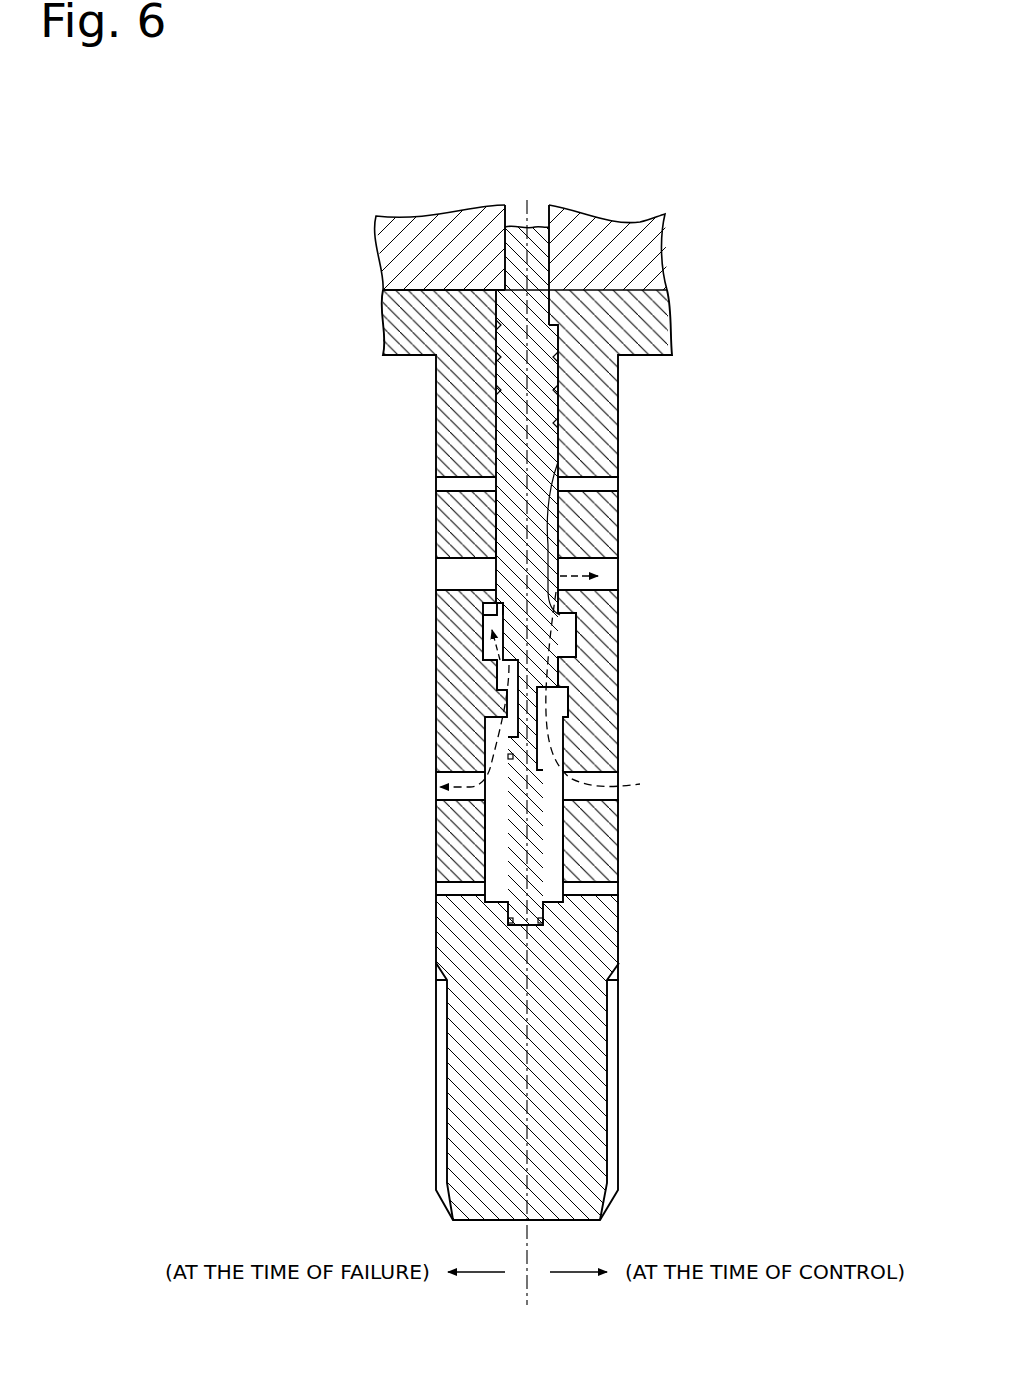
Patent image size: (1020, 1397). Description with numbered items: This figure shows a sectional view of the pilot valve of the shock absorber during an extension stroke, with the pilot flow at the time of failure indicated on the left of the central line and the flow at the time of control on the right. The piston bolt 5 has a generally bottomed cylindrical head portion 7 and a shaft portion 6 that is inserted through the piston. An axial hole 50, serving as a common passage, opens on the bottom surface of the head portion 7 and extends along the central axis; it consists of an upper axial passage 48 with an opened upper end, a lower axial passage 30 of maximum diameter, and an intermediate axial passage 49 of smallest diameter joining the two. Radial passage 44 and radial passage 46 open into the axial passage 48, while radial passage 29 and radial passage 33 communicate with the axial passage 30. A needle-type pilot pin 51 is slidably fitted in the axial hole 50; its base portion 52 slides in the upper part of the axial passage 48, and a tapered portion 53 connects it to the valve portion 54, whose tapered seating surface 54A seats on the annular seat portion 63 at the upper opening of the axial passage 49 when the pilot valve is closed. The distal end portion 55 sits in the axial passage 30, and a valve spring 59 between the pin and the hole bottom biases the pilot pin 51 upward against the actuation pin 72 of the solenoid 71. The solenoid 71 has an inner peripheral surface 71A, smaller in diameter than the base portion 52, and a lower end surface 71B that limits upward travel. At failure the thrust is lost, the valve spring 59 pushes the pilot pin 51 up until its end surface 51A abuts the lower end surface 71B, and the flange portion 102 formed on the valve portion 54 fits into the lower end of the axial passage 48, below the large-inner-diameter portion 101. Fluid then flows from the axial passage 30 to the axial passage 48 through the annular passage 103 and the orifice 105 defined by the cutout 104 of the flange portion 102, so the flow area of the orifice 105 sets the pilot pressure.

The piston bolt 5 is at (440, 1097).
The shaft portion 6 is at (582, 1077).
The head portion 7 is at (652, 318).
The radial passage 29 is at (612, 922).
The axial passage 30 is at (605, 888).
The radial passage 33 is at (610, 778).
The radial passage 44 is at (614, 485).
The radial passage 46 is at (462, 575).
The axial passage 48 is at (565, 693).
The axial passage 49 is at (550, 710).
The axial hole 50 is at (493, 525).
The pilot pin 51 is at (496, 407).
The end surface 51A is at (515, 268).
The base portion 52 is at (542, 376).
The tapered portion 53 is at (495, 455).
The valve portion 54 is at (540, 527).
The seating surface 54A is at (503, 662).
The distal end portion 55 is at (555, 837).
The valve spring 59 is at (510, 863).
The seat portion 63 is at (507, 693).
The solenoid 71 is at (635, 224).
The inner peripheral surface 71A is at (548, 262).
The lower end surface 71B is at (427, 290).
The actuation pin 72 is at (521, 240).
The large-inner-diameter portion 101 is at (487, 635).
The flange portion 102 is at (570, 637).
The annular passage 103 is at (488, 652).
The cutout 104 is at (499, 609).
The orifice 105 is at (492, 612).